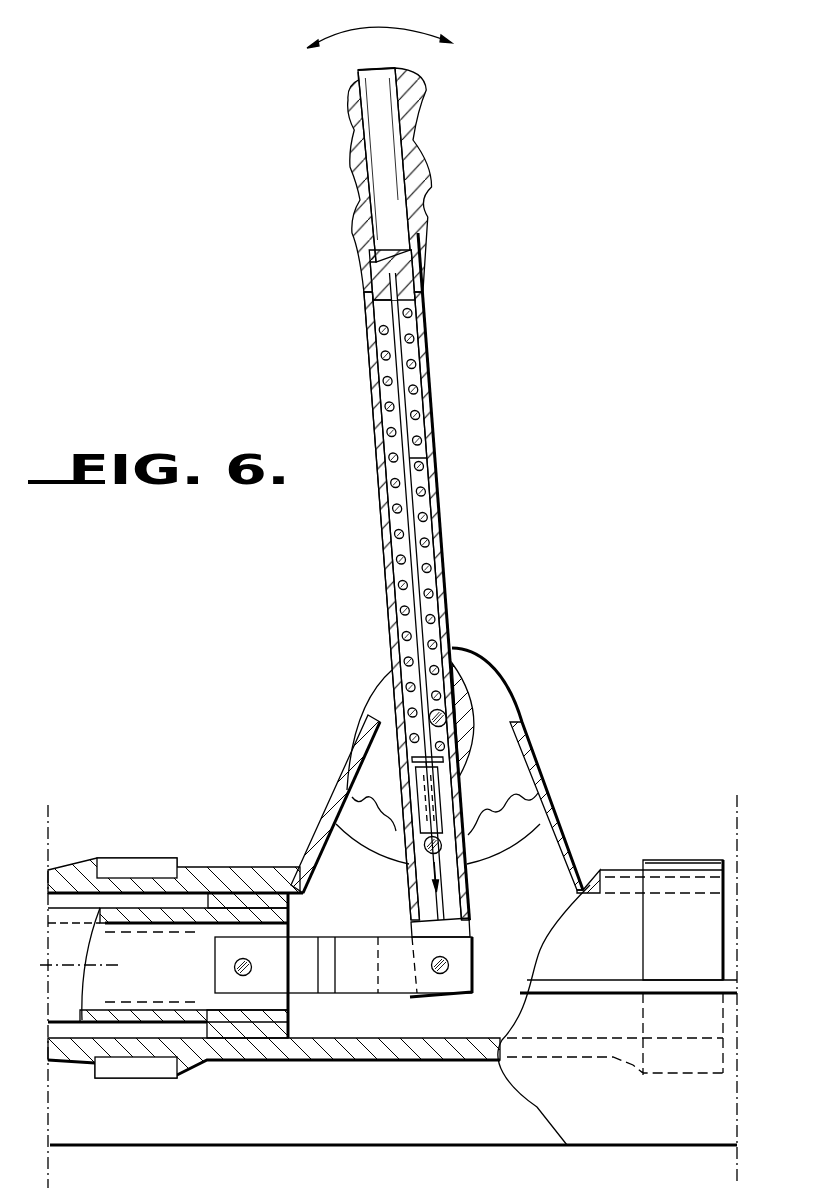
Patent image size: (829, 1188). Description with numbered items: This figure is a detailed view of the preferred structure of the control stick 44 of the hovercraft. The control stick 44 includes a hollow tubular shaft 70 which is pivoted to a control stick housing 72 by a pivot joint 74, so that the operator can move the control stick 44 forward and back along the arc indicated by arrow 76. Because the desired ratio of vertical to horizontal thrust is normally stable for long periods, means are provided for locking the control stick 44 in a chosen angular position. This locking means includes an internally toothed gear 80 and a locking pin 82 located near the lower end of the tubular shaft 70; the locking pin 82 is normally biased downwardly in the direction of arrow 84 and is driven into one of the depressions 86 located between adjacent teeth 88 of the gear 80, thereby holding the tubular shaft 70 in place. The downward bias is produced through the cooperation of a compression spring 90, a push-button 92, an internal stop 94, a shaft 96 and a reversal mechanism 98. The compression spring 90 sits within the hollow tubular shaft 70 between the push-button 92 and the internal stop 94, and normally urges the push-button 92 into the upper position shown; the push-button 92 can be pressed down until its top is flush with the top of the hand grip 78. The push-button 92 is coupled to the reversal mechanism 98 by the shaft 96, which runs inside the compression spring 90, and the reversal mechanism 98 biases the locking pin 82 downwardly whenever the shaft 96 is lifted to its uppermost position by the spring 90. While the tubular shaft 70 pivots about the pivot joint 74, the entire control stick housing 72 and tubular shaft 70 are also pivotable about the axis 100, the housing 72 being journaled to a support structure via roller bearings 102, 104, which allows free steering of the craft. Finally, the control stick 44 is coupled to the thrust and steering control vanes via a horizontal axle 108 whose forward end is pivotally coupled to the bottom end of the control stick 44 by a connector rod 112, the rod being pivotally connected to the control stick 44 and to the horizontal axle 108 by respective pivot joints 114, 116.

The control stick 44 is at (470, 318).
The hollow tubular shaft 70 is at (454, 576).
The control stick housing 72 is at (334, 788).
The pivot joint 74 is at (492, 688).
The arrow 76 is at (417, 32).
The hand grip 78 is at (427, 184).
The internally toothed gear 80 is at (530, 830).
The locking pin 82 is at (395, 867).
The arrow 84 is at (476, 887).
The depressions 86 is at (497, 821).
The teeth 88 is at (388, 824).
The compression spring 90 is at (452, 530).
The push-button 92 is at (349, 161).
The internal stop 94 is at (450, 753).
The shaft 96 is at (458, 596).
The reversal mechanism 98 is at (376, 784).
The axis 100 is at (100, 963).
The roller bearing 102 is at (140, 858).
The roller bearing 104 is at (660, 870).
The horizontal axle 108 is at (192, 1040).
The connector rod 112 is at (347, 997).
The pivot joint 114 is at (450, 965).
The pivot joint 116 is at (236, 967).